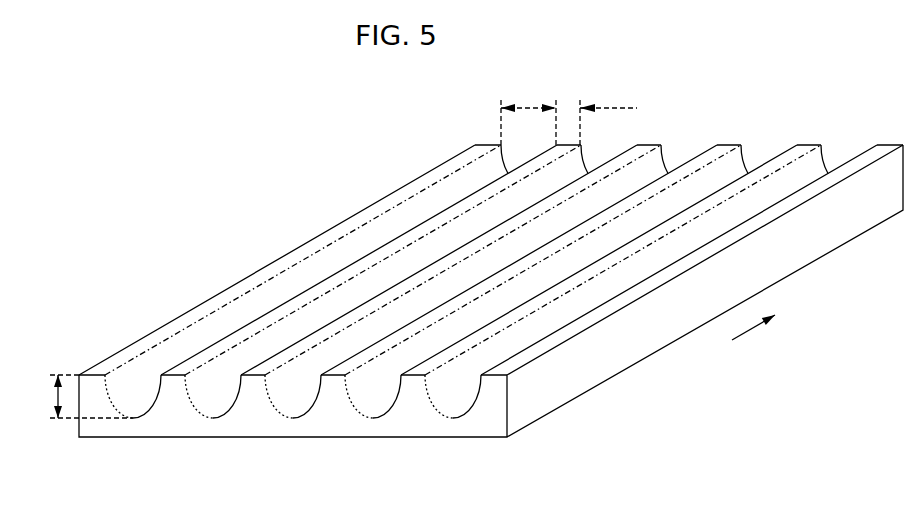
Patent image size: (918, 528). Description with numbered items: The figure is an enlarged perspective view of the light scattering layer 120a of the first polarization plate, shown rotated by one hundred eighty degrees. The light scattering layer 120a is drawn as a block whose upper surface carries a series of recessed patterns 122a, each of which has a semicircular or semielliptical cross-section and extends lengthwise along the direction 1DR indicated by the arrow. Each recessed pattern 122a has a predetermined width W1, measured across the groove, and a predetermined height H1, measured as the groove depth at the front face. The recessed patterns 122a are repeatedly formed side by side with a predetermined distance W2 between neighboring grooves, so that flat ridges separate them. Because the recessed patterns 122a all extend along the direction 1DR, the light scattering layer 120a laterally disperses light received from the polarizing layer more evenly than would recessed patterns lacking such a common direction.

The light scattering layer 120a is at (491, 319).
The recessed patterns 122a is at (303, 278).
The height H1 is at (79, 396).
The width W1 is at (528, 112).
The distance W2 is at (608, 112).
The direction 1DR is at (732, 342).